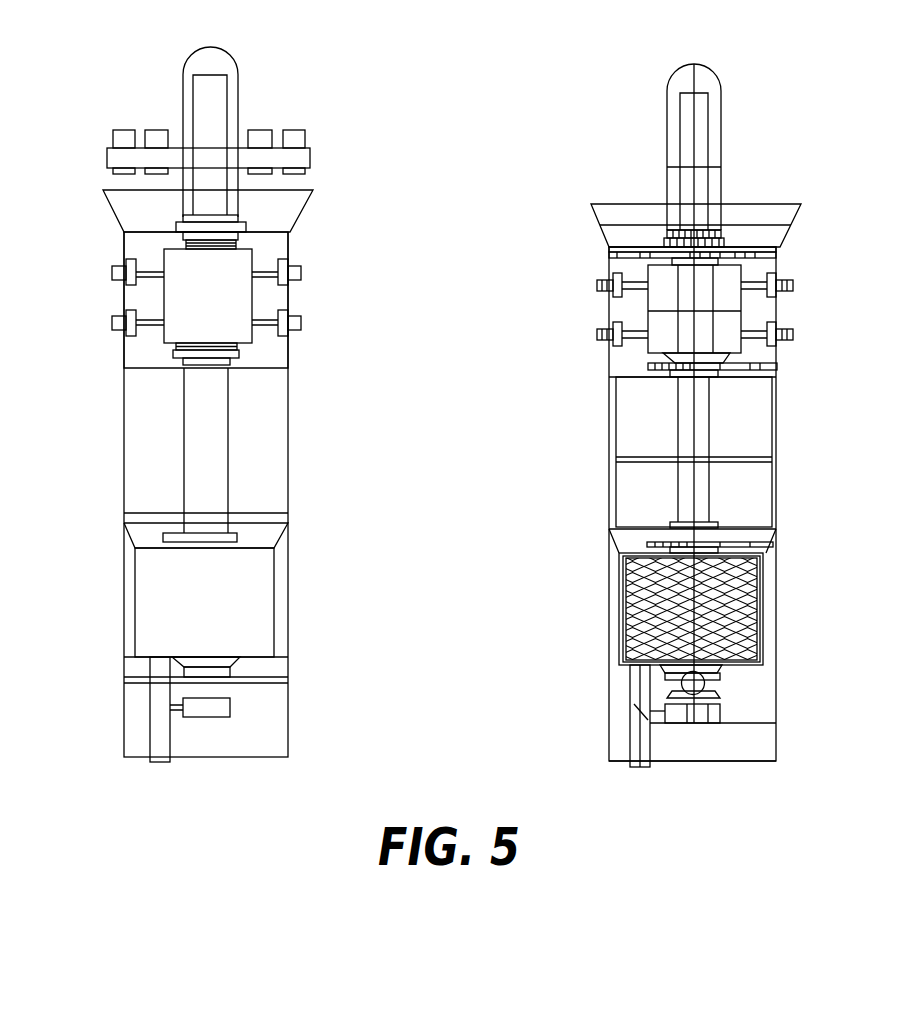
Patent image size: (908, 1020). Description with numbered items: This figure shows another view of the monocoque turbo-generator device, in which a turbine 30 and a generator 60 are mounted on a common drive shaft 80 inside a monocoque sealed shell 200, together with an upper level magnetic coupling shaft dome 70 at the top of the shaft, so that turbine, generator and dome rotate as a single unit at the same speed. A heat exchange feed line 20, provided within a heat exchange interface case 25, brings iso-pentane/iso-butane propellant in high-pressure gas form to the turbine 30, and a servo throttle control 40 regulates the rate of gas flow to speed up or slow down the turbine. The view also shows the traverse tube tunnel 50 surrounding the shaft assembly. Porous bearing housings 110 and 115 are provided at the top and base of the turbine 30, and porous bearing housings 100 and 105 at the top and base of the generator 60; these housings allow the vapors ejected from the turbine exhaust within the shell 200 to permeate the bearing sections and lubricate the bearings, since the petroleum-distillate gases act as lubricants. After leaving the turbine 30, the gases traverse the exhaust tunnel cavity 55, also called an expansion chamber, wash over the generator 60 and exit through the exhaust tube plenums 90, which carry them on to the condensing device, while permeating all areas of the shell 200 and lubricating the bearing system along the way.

The heat exchange feed line 20 is at (628, 740).
The heat exchange interface case 25 is at (775, 733).
The turbine 30 is at (263, 595).
The servo throttle control 40 is at (230, 706).
The traverse tube tunnel 50 is at (610, 457).
The exhaust tunnel cavity 55 is at (136, 421).
The generator 60 is at (170, 296).
The upper level magnetic coupling shaft dome 70 is at (187, 80).
The drive shaft 80 is at (677, 178).
The exhaust tube plenums 90 is at (310, 155).
The porous bearing housing 100 is at (267, 202).
The porous bearing housing 105 is at (278, 353).
The porous bearing housing 110 is at (287, 517).
The porous bearing housing 115 is at (277, 655).
The monocoque sealed shell 200 is at (288, 433).